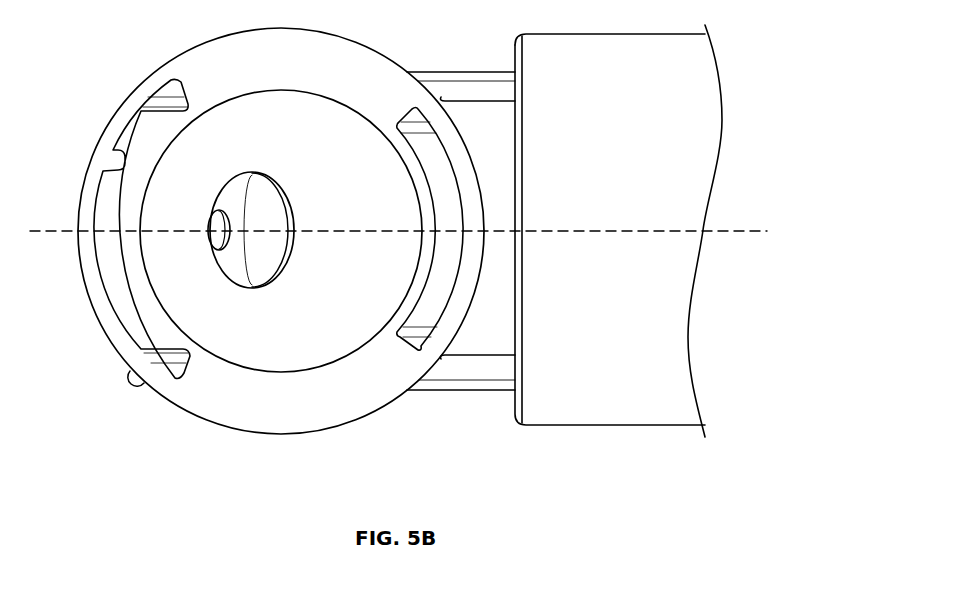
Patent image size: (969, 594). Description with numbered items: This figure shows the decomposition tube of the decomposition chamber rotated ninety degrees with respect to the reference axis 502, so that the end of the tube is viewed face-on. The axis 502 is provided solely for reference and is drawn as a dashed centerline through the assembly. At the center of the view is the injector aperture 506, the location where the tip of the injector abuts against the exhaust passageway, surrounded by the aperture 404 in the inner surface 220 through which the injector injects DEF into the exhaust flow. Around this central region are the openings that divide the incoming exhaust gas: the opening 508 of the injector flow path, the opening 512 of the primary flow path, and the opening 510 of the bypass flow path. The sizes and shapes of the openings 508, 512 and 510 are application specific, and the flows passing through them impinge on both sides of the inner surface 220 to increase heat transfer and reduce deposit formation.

The inner surface 220 is at (313, 231).
The aperture 404 is at (277, 270).
The axis 502 is at (753, 229).
The injector aperture 506 is at (218, 213).
The opening of the injector flow path 508 is at (123, 307).
The opening of the bypass flow path 510 is at (443, 183).
The opening of the primary flow path 512 is at (275, 362).